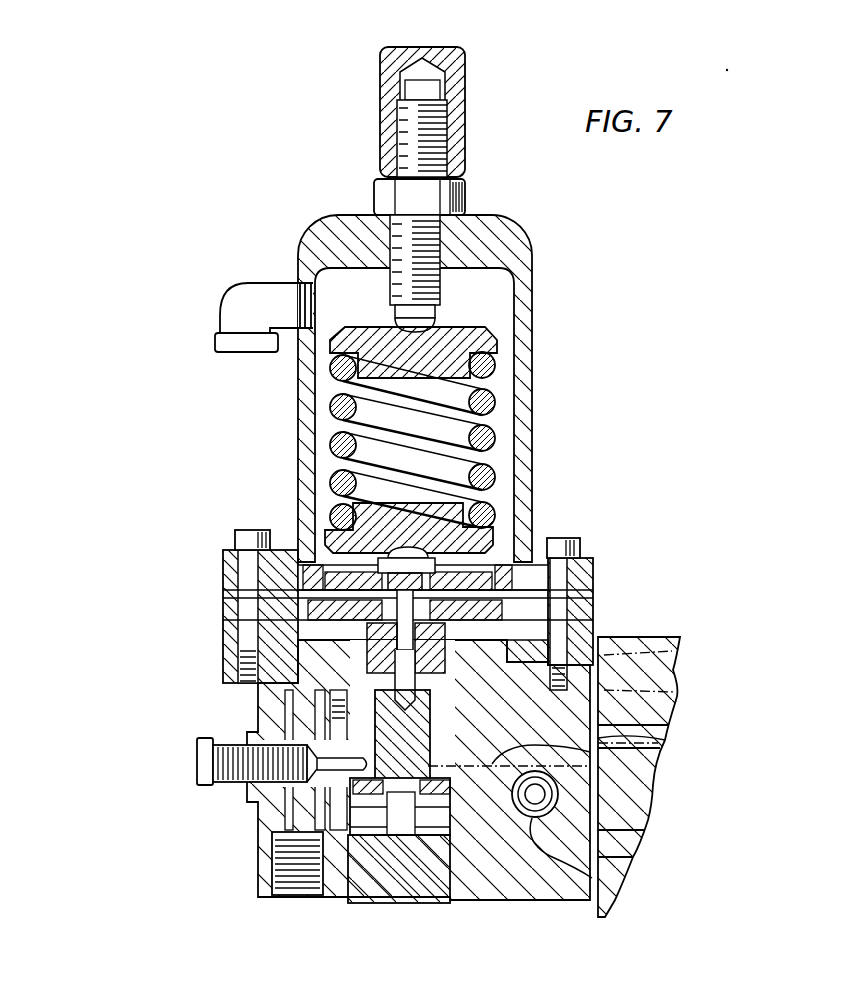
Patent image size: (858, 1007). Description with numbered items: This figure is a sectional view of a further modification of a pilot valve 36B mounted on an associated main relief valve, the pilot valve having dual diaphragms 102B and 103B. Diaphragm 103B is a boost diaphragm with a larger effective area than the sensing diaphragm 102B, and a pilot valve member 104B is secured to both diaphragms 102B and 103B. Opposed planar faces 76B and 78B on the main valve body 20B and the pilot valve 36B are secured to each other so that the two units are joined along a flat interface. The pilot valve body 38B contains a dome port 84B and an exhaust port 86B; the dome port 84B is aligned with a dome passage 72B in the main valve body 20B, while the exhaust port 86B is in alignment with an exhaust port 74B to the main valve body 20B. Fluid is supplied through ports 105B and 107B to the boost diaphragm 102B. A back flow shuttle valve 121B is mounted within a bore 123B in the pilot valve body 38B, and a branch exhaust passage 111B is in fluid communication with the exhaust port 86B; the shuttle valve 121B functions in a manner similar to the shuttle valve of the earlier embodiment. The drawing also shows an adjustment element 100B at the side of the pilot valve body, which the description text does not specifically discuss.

The pilot valve 36B is at (552, 454).
The sensing diaphragm 102B is at (520, 585).
The boost diaphragm 103B is at (590, 570).
The main valve body 20B is at (640, 637).
The port 107B is at (265, 597).
The pilot valve body 38B is at (260, 698).
The adjustment screw 100B is at (258, 815).
The port 105B is at (417, 673).
The pilot valve member 104B is at (408, 738).
The planar face 78B is at (680, 660).
The planar face 76B is at (680, 690).
The dome port 84B is at (650, 737).
The dome passage 72B is at (655, 748).
The branch exhaust passage 111B is at (655, 762).
The back flow shuttle valve 121B is at (650, 800).
The exhaust port 86B is at (640, 843).
The exhaust port 74B is at (623, 849).
The bore 123B is at (625, 883).